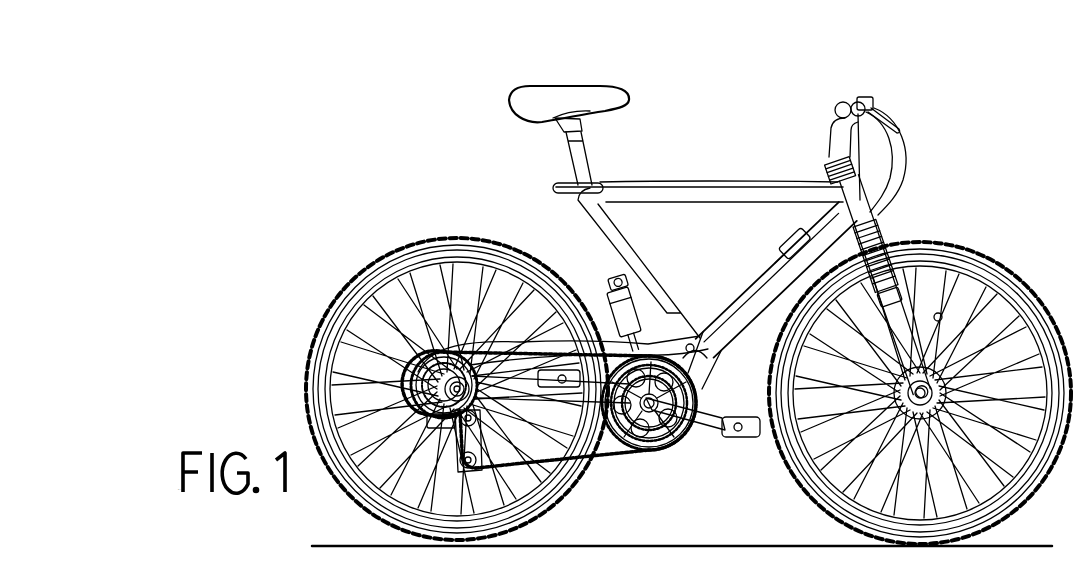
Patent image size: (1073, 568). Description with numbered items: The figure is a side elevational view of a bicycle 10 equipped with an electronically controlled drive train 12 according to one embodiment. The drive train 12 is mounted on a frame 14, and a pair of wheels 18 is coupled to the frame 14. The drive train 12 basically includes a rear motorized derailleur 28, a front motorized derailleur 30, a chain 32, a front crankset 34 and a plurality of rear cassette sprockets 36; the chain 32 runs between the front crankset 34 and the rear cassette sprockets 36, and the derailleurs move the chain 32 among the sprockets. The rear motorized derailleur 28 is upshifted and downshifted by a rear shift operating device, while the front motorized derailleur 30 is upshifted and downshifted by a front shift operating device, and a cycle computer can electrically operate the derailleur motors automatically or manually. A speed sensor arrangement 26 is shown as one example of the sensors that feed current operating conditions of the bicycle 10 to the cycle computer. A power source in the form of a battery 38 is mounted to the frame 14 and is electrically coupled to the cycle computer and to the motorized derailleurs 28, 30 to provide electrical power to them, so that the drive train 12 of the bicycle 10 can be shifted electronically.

The bicycle 10 is at (943, 123).
The electronically controlled drive train 12 is at (693, 450).
The frame 14 is at (766, 278).
The wheels 18 is at (435, 237).
The speed sensor arrangement 26 is at (893, 313).
The rear motorized derailleur 28 is at (367, 509).
The front motorized derailleur 30 is at (649, 346).
The chain 32 is at (628, 455).
The front crankset 34 is at (616, 432).
The rear cassette sprockets 36 is at (418, 358).
The battery 38 is at (785, 235).